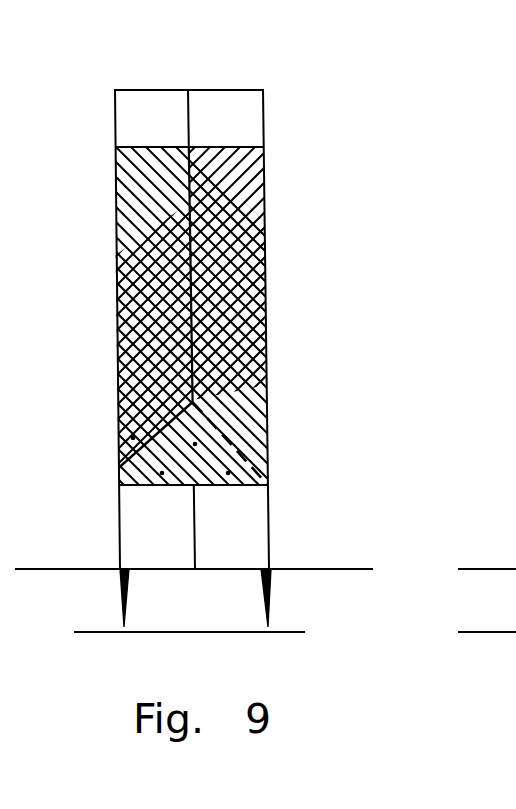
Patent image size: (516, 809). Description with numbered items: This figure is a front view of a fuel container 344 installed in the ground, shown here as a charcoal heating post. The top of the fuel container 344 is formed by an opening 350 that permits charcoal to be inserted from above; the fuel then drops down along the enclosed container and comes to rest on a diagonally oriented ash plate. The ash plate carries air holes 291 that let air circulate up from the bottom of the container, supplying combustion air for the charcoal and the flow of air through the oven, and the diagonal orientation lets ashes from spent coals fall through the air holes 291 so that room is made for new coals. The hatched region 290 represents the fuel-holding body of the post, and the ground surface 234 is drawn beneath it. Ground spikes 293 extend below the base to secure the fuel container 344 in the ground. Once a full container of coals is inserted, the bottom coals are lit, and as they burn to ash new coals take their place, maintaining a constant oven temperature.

The fuel container 344 is at (130, 72).
The opening 350 is at (169, 90).
The hatched crystalline body 290 is at (265, 242).
The air holes 291 is at (208, 414).
The substrate surface 234 is at (300, 568).
The ground spikes 293 is at (138, 605).